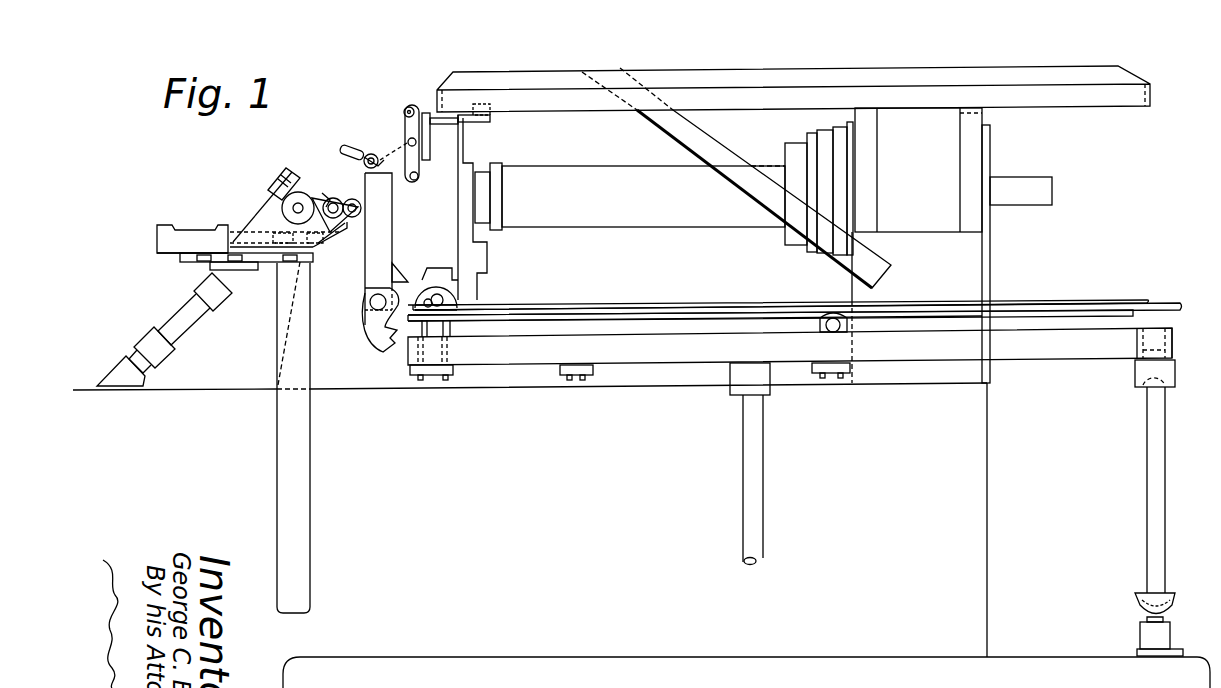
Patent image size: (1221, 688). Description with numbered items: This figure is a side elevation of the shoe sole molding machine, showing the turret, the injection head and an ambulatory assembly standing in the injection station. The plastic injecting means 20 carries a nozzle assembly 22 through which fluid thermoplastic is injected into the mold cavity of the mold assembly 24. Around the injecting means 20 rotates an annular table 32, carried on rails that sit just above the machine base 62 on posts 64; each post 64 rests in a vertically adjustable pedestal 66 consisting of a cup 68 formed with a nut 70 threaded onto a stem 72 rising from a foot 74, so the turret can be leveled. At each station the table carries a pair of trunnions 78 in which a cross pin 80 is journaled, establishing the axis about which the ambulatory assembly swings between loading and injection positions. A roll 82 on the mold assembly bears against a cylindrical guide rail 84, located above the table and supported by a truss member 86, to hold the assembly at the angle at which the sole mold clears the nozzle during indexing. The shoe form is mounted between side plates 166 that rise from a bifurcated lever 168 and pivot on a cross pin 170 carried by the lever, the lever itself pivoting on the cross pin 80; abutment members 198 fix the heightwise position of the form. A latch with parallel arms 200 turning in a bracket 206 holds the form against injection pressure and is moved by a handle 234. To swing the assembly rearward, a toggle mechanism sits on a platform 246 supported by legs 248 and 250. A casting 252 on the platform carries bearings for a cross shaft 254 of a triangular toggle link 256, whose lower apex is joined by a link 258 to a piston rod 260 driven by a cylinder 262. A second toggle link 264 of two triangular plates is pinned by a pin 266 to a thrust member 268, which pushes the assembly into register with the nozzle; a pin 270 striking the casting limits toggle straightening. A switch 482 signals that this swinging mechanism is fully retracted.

The plastic injecting means 20 is at (1003, 224).
The nozzle assembly 22 is at (486, 226).
The mold assembly 24 is at (442, 176).
The annular table 32 is at (1156, 300).
The machine base 62 is at (972, 516).
The post 64 is at (1155, 496).
The pedestal 66 is at (1127, 612).
The cup 68 is at (1163, 600).
The nut 70 is at (1165, 616).
The stem 72 is at (1150, 625).
The foot 74 is at (1160, 638).
The trunnions 78 is at (458, 292).
The cross pin 80 is at (437, 292).
The roll 82 is at (490, 118).
The cylindrical guide rail 84 is at (578, 105).
The brace 86 is at (675, 133).
The side plates 166 is at (366, 275).
The bifurcated lever 168 is at (371, 338).
The cross pin 170 is at (370, 302).
The abutment members 198 is at (400, 268).
The arms 200 is at (402, 152).
The bracket 206 is at (410, 106).
The handle 234 is at (345, 149).
The platform 246 is at (266, 264).
The leg 248 is at (197, 313).
The leg 250 is at (277, 413).
The casting 252 is at (270, 205).
The cross shaft 254 is at (305, 200).
The toggle link 256 is at (323, 198).
The link 258 is at (273, 313).
The piston rod 260 is at (243, 220).
The cylinder 262 is at (158, 240).
The toggle link 264 is at (340, 233).
The pin 266 is at (357, 207).
The thrust member 268 is at (368, 183).
The pin 270 is at (300, 228).
The switch 482 is at (182, 223).